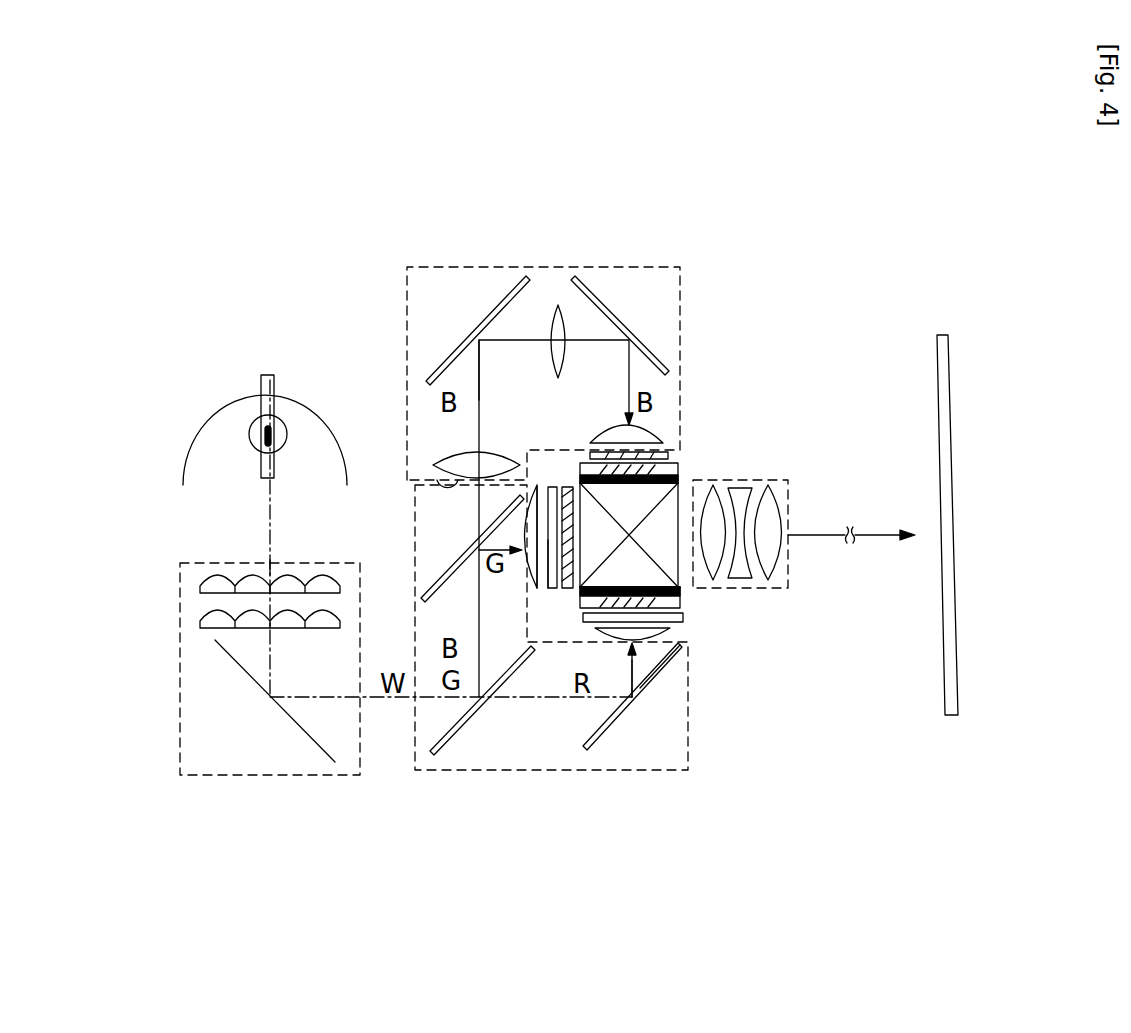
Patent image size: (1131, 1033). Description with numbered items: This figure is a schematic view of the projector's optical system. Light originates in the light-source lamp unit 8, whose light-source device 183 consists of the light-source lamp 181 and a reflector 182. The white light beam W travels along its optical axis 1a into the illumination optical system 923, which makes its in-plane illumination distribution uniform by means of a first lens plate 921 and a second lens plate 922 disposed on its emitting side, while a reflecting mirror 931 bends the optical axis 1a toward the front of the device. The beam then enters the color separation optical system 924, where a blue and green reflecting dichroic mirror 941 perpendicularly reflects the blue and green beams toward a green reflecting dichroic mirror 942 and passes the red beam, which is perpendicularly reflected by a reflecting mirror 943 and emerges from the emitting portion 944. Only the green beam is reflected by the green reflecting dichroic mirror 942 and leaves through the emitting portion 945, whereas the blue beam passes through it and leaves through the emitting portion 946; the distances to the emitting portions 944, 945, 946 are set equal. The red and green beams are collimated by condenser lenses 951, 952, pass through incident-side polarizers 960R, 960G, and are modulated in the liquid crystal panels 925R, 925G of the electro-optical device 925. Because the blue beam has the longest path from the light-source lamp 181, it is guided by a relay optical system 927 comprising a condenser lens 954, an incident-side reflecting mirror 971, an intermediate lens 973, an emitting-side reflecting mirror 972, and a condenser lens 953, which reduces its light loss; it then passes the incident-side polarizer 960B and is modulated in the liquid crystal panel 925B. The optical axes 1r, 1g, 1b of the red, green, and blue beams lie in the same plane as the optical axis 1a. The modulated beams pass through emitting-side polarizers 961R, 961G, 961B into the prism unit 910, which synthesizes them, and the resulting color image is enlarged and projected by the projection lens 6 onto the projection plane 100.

The light-source lamp unit 8 is at (222, 410).
The light-source lamp 181 is at (257, 418).
The reflector 182 is at (296, 400).
The light-source device 183 is at (307, 303).
The optical axis 1a is at (262, 552).
The optical axis 1b is at (530, 352).
The optical axis 1g is at (478, 534).
The optical axis 1r is at (572, 625).
The first lens plate 921 is at (200, 584).
The second lens plate 922 is at (205, 620).
The illumination optical system 923 is at (178, 703).
The color separation optical system 924 is at (695, 755).
The electro-optical device 925 is at (580, 597).
The liquid crystal panel 925R is at (680, 604).
The liquid crystal panel 925G is at (567, 487).
The liquid crystal panel 925B is at (678, 470).
The relay optical system 927 is at (420, 262).
The reflecting mirror 931 is at (298, 728).
The blue and green reflecting dichroic mirror 941 is at (440, 755).
The green reflecting dichroic mirror 942 is at (450, 567).
The reflecting mirror 943 is at (600, 750).
The emitting portion 944 is at (685, 650).
The emitting portion 945 is at (515, 592).
The emitting portion 946 is at (440, 484).
The condenser lens 951 is at (672, 636).
The condenser lens 952 is at (531, 487).
The condenser lens 953 is at (664, 430).
The condenser lens 954 is at (445, 455).
The incident-side polarizer 960R is at (682, 620).
The incident-side polarizer 960G is at (548, 525).
The incident-side polarizer 960B is at (668, 455).
The emitting-side polarizer 961R is at (680, 587).
The emitting-side polarizer 961G is at (550, 590).
The emitting-side polarizer 961B is at (680, 483).
The incident-side reflecting mirror 971 is at (447, 364).
The emitting-side reflecting mirror 972 is at (618, 320).
The intermediate lens 973 is at (558, 305).
The prism unit 910 is at (679, 495).
The projection lens 6 is at (790, 485).
The projection plane 100 is at (950, 375).